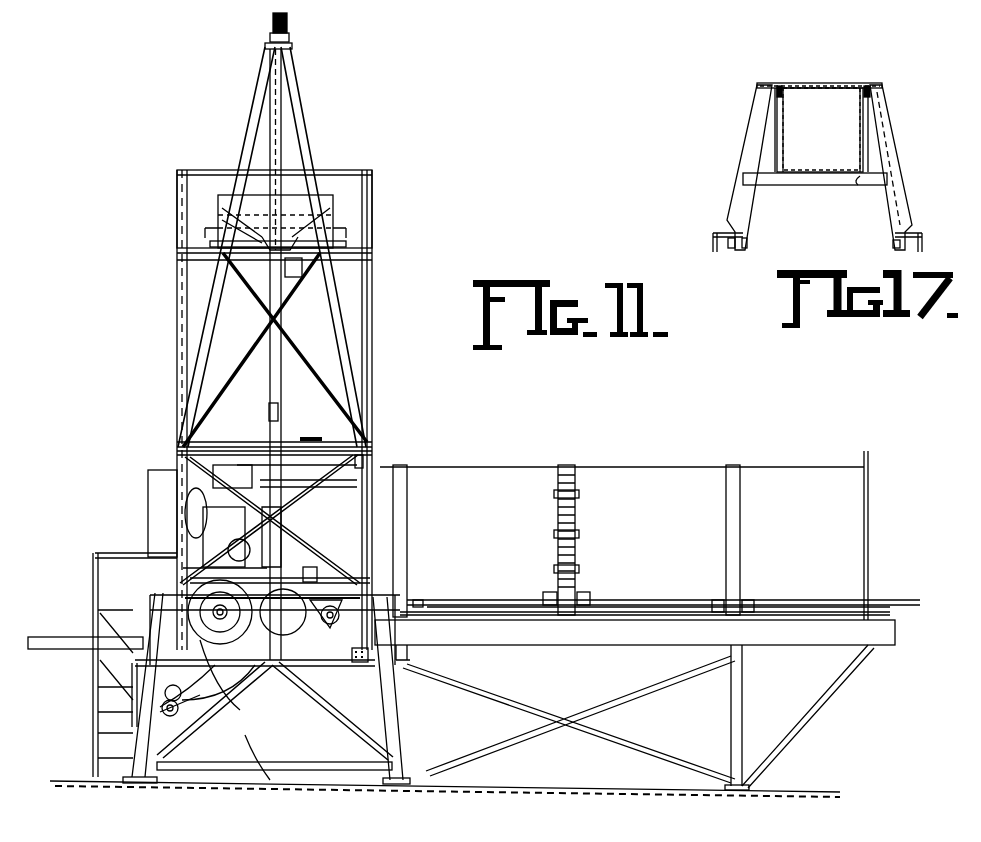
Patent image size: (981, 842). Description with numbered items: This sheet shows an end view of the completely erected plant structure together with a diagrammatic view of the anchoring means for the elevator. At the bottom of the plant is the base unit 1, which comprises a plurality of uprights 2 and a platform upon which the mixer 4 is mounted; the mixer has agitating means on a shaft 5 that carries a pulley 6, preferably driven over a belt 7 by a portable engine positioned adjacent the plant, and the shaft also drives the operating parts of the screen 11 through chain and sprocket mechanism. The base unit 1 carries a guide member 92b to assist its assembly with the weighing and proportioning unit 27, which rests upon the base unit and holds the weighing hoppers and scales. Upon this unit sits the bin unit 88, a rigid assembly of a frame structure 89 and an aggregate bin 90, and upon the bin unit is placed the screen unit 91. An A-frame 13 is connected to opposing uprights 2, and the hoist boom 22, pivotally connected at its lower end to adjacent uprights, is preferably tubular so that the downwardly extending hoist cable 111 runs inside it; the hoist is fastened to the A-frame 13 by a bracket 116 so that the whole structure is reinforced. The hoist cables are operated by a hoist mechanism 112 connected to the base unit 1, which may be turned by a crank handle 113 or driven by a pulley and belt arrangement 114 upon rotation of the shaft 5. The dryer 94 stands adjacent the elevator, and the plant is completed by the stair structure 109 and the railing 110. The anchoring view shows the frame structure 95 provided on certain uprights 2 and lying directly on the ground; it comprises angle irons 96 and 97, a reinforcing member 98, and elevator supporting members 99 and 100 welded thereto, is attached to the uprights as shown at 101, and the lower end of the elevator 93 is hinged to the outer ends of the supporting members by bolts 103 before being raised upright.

In FIG. 11, the base unit 1 is at (333, 665).
In FIG. 11, the uprights 2 is at (147, 728).
In FIG. 17, the uprights 2 is at (712, 250).
In FIG. 11, the mixer 4 is at (300, 587).
In FIG. 11, the shaft 5 is at (310, 576).
In FIG. 11, the pulley 6 is at (250, 673).
In FIG. 11, the belt 7 is at (60, 692).
In FIG. 11, the screen 11 is at (318, 200).
In FIG. 11, the A-frame 13 is at (355, 363).
In FIG. 11, the hoist boom 22 is at (280, 320).
In FIG. 11, the weighing and proportioning unit 27 is at (372, 515).
In FIG. 11, the bin unit 88 is at (364, 326).
In FIG. 11, the frame structure 89 is at (178, 402).
In FIG. 11, the aggregate bin 90 is at (203, 294).
In FIG. 11, the screen unit 91 is at (335, 213).
In FIG. 11, the guide member 92b is at (370, 632).
In FIG. 17, the elevator 93 is at (838, 83).
In FIG. 11, the dryer 94 is at (638, 476).
In FIG. 17, the frame structure 95 is at (897, 192).
In FIG. 17, the angle iron 96 is at (888, 137).
In FIG. 17, the angle iron 97 is at (728, 167).
In FIG. 17, the reinforcing member 98 is at (857, 185).
In FIG. 17, the elevator supporting member 99 is at (868, 112).
In FIG. 17, the elevator supporting member 100 is at (780, 110).
In FIG. 17, the attachment 101 is at (747, 247).
In FIG. 17, the bolts 103 is at (779, 88).
In FIG. 11, the stair structure 109 is at (97, 593).
In FIG. 11, the railing 110 is at (117, 553).
In FIG. 11, the hoist cable 111 is at (289, 30).
In FIG. 11, the hoist mechanism 112 is at (230, 720).
In FIG. 11, the crank handle 113 is at (200, 770).
In FIG. 11, the pulley and belt arrangement 114 is at (260, 730).
In FIG. 11, the bracket 116 is at (345, 240).